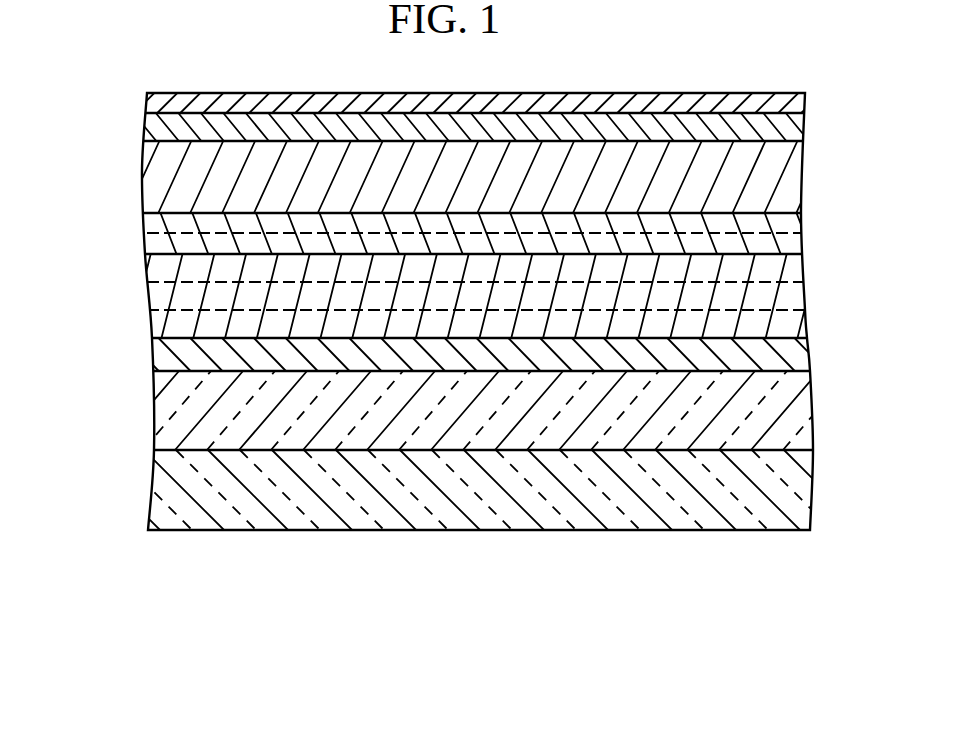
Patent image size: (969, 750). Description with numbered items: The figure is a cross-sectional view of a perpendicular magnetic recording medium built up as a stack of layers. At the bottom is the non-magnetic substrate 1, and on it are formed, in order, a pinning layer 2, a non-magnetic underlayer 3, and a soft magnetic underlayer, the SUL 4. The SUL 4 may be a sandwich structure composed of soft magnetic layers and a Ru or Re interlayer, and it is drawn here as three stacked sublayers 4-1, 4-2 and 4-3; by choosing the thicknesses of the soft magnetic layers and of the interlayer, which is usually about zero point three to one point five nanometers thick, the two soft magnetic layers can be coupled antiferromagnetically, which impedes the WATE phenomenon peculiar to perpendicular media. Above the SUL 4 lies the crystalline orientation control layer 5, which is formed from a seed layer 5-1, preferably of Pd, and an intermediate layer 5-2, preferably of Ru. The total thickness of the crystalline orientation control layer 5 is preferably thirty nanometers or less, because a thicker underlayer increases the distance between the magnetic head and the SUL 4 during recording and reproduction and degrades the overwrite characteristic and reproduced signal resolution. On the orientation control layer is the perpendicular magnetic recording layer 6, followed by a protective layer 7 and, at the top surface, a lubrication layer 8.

The non-magnetic substrate 1 is at (790, 478).
The pinning layer 2 is at (793, 405).
The non-magnetic underlayer 3 is at (793, 352).
The SUL 4 is at (464, 304).
The first orientation control layer 4-1 is at (153, 327).
The second orientation control layer 4-2 is at (144, 300).
The third orientation control layer 4-3 is at (143, 275).
The crystalline orientation control layer 5 is at (455, 221).
The seed layer 5-1 is at (142, 247).
The intermediate layer 5-2 is at (142, 224).
The perpendicular magnetic recording layer 6 is at (785, 167).
The protective layer 7 is at (800, 134).
The lubrication layer 8 is at (795, 102).